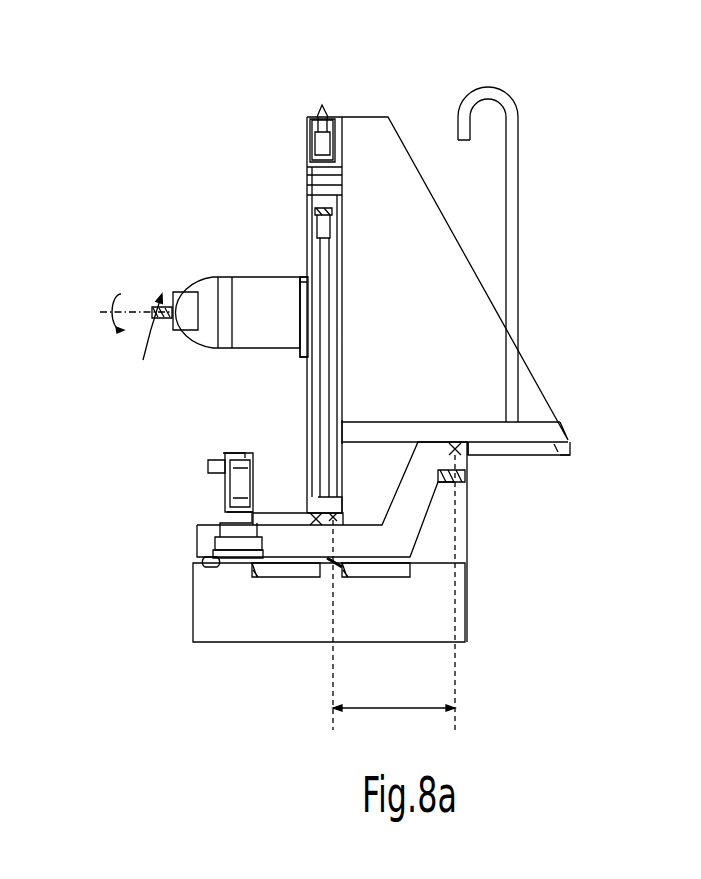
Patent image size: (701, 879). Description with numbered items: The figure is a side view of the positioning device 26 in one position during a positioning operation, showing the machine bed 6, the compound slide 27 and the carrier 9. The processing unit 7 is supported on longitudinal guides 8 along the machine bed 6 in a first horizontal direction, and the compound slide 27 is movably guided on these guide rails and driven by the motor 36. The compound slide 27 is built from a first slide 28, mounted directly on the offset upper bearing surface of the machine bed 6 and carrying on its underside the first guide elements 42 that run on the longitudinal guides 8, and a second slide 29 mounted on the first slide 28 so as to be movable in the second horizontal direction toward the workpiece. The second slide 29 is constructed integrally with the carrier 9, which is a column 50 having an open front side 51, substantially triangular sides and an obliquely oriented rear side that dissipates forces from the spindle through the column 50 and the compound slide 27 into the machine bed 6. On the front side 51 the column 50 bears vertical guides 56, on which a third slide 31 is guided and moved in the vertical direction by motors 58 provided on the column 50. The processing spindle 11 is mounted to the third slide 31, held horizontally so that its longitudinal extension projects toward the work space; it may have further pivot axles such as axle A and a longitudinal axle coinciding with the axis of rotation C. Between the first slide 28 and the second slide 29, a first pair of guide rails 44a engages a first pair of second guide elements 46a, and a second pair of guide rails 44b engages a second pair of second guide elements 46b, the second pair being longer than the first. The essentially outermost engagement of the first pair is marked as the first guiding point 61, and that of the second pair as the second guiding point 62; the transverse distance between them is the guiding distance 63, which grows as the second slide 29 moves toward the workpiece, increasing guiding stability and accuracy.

The machine bed 6 is at (233, 623).
The processing unit 7 is at (197, 238).
The longitudinal guides 8 is at (468, 626).
The carrier 9 is at (415, 133).
The processing spindle 11 is at (208, 297).
The positioning device 26 is at (545, 337).
The compound slide 27 is at (480, 428).
The first slide 28 is at (405, 517).
The second slide 29 is at (545, 432).
The third slide 31 is at (303, 277).
The motor 36 is at (225, 476).
The first guide elements 42 is at (318, 592).
The guide rails 44a is at (478, 589).
The guide rails 44b is at (470, 447).
The first pair of second guide elements 46a is at (347, 519).
The second pair of second guide elements 46b is at (560, 455).
The column 50 is at (372, 145).
The front side 51 is at (308, 393).
The vertical guides 56 is at (316, 255).
The motors 58 is at (320, 132).
The first guiding point 61 is at (331, 515).
The second guiding point 62 is at (467, 470).
The guiding distance 63 is at (388, 710).
The pivot axle A is at (151, 341).
The axis of rotation C is at (116, 328).